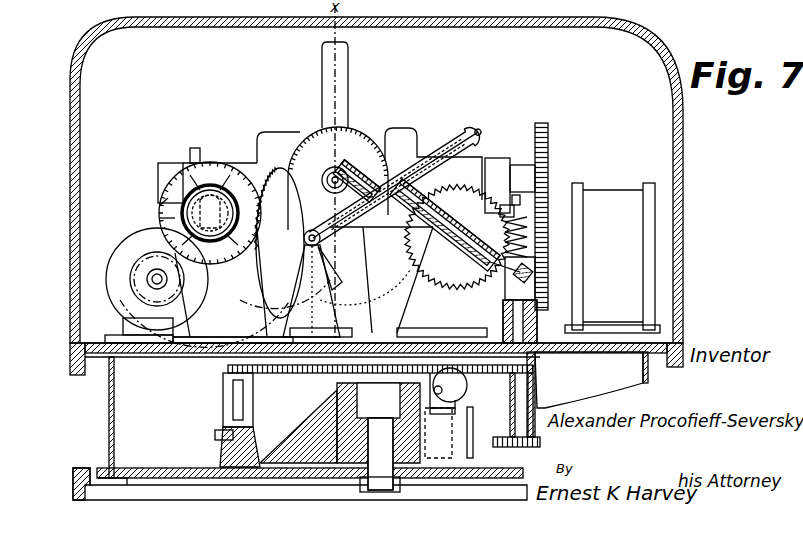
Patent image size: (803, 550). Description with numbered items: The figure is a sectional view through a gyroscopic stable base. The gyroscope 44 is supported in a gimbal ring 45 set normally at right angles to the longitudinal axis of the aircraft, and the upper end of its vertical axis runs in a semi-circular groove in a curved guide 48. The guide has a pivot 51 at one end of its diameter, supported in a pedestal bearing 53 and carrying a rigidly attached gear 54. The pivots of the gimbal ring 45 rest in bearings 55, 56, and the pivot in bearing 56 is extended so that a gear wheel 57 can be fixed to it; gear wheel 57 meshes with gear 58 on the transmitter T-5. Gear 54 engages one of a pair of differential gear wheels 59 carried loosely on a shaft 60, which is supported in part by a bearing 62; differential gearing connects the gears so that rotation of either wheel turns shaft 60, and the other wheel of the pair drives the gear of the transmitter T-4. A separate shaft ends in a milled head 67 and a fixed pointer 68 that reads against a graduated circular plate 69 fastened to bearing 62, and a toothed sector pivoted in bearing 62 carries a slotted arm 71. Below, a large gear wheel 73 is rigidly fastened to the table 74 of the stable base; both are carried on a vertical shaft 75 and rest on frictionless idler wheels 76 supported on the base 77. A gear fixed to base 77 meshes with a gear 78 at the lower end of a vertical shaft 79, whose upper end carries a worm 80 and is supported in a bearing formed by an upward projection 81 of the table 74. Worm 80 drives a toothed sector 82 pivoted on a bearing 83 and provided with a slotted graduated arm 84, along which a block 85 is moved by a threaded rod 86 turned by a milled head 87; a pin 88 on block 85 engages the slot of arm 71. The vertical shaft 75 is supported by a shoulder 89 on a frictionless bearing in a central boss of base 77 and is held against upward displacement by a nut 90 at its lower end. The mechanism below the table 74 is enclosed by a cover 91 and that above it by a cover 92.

The gyroscope 44 is at (368, 256).
The gimbal ring 45 is at (400, 178).
The curved guide 48 is at (348, 66).
The pivot 51 is at (326, 178).
The pedestal bearing 53 is at (348, 297).
The gear 54 is at (352, 130).
The bearing 55 is at (170, 163).
The bearing 56 is at (498, 160).
The gear wheel 57 is at (541, 123).
The gear 58 is at (532, 276).
The differential gear wheels 59 is at (268, 165).
The shaft 60 is at (285, 243).
The bearing 62 is at (222, 340).
The milled head 67 is at (162, 205).
The fixed pointer 68 is at (212, 165).
The graduated circular plate 69 is at (160, 218).
The slotted arm 71 is at (478, 125).
The large gear wheel 73 is at (296, 373).
The table 74 is at (598, 350).
The vertical shaft 75 is at (385, 450).
The frictionless idler wheels 76 is at (233, 398).
The base 77 is at (135, 467).
The gear 78 is at (541, 437).
The vertical shaft 79 is at (538, 325).
The worm 80 is at (528, 218).
The upward projection 81 is at (503, 312).
The toothed sector 82 is at (452, 278).
The bearing 83 is at (426, 282).
The slotted graduated arm 84 is at (372, 170).
The block 85 is at (378, 215).
The threaded rod 86 is at (448, 207).
The milled head 87 is at (540, 262).
The pin 88 is at (433, 164).
The shoulder 89 is at (337, 440).
The nut 90 is at (400, 490).
The cover 91 is at (109, 408).
The cover 92 is at (100, 78).
The transmitter T-4 is at (120, 300).
The transmitter T-5 is at (612, 258).